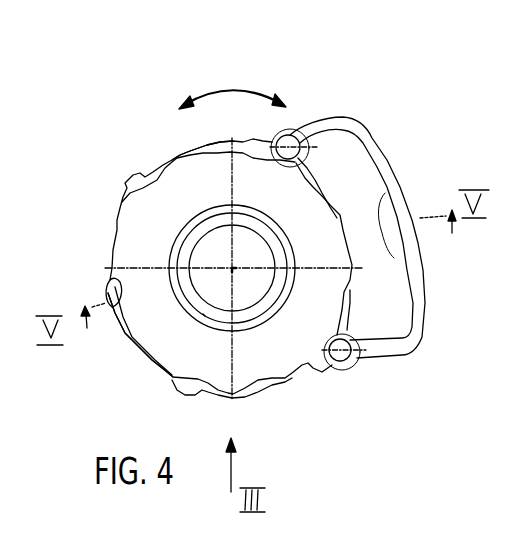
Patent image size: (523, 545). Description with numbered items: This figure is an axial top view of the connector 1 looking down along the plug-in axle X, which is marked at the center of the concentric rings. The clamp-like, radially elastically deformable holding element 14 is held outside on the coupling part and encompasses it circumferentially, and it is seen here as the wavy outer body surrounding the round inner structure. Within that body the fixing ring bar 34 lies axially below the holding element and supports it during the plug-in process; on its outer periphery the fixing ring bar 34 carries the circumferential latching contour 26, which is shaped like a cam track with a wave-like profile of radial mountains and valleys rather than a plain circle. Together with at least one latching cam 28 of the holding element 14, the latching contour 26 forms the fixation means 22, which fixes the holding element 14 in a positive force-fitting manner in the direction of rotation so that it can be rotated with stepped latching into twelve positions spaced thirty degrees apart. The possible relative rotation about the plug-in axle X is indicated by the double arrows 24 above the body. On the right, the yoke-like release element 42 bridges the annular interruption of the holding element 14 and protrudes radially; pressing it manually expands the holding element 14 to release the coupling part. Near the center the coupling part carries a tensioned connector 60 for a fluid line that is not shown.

The connector 1 is at (129, 148).
The holding element 14 is at (276, 392).
The fixation means 22 is at (107, 331).
The double arrows 24 is at (232, 86).
The latching contour 26 is at (120, 242).
The latching cam 28 is at (104, 290).
The fixing ring bar 34 is at (175, 180).
The release element 42 is at (390, 178).
The tensioned connector 60 is at (205, 316).
The plug-in axle X is at (232, 270).